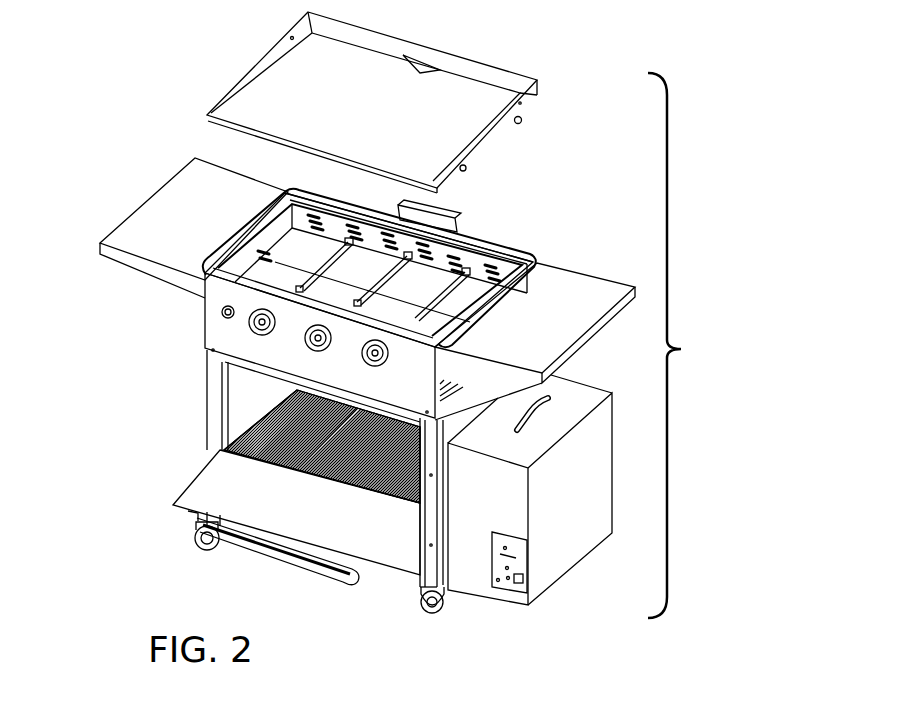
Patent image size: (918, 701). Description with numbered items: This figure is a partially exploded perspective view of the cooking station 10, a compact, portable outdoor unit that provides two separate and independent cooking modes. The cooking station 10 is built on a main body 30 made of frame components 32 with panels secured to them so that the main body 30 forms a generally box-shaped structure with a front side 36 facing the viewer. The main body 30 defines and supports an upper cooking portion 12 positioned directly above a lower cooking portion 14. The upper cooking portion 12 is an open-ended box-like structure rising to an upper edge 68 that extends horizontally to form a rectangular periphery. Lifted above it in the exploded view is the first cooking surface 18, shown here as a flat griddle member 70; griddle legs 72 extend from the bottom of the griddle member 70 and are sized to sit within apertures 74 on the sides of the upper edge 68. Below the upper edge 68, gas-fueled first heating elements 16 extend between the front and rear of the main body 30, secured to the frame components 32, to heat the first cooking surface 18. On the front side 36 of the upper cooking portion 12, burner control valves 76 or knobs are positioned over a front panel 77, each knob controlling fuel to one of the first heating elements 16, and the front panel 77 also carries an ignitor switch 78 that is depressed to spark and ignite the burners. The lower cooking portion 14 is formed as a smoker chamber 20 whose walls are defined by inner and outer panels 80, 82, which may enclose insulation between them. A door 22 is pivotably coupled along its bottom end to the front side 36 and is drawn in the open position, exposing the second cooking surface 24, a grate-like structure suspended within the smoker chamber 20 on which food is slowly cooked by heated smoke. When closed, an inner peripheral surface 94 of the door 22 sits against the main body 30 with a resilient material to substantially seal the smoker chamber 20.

The cooking station 10 is at (680, 345).
The upper cooking portion 12 is at (158, 305).
The lower cooking portion 14 is at (138, 391).
The first heating element 16 is at (379, 246).
The first cooking surface 18 is at (258, 90).
The smoker chamber 20 is at (245, 396).
The door 22 is at (175, 490).
The second cooking surface 24 is at (245, 429).
The main body 30 is at (446, 539).
The frame components 32 is at (418, 548).
The front side 36 is at (138, 578).
The upper edge 68 is at (312, 198).
The griddle member 70 is at (374, 96).
The griddle legs 72 is at (525, 119).
The apertures 74 is at (480, 307).
The burner control valves 76 is at (368, 366).
The front panel 77 is at (281, 347).
The ignitor switch 78 is at (235, 318).
The inner panel 80 is at (247, 383).
The outer panel 82 is at (453, 425).
The inner peripheral surface 94 is at (417, 510).